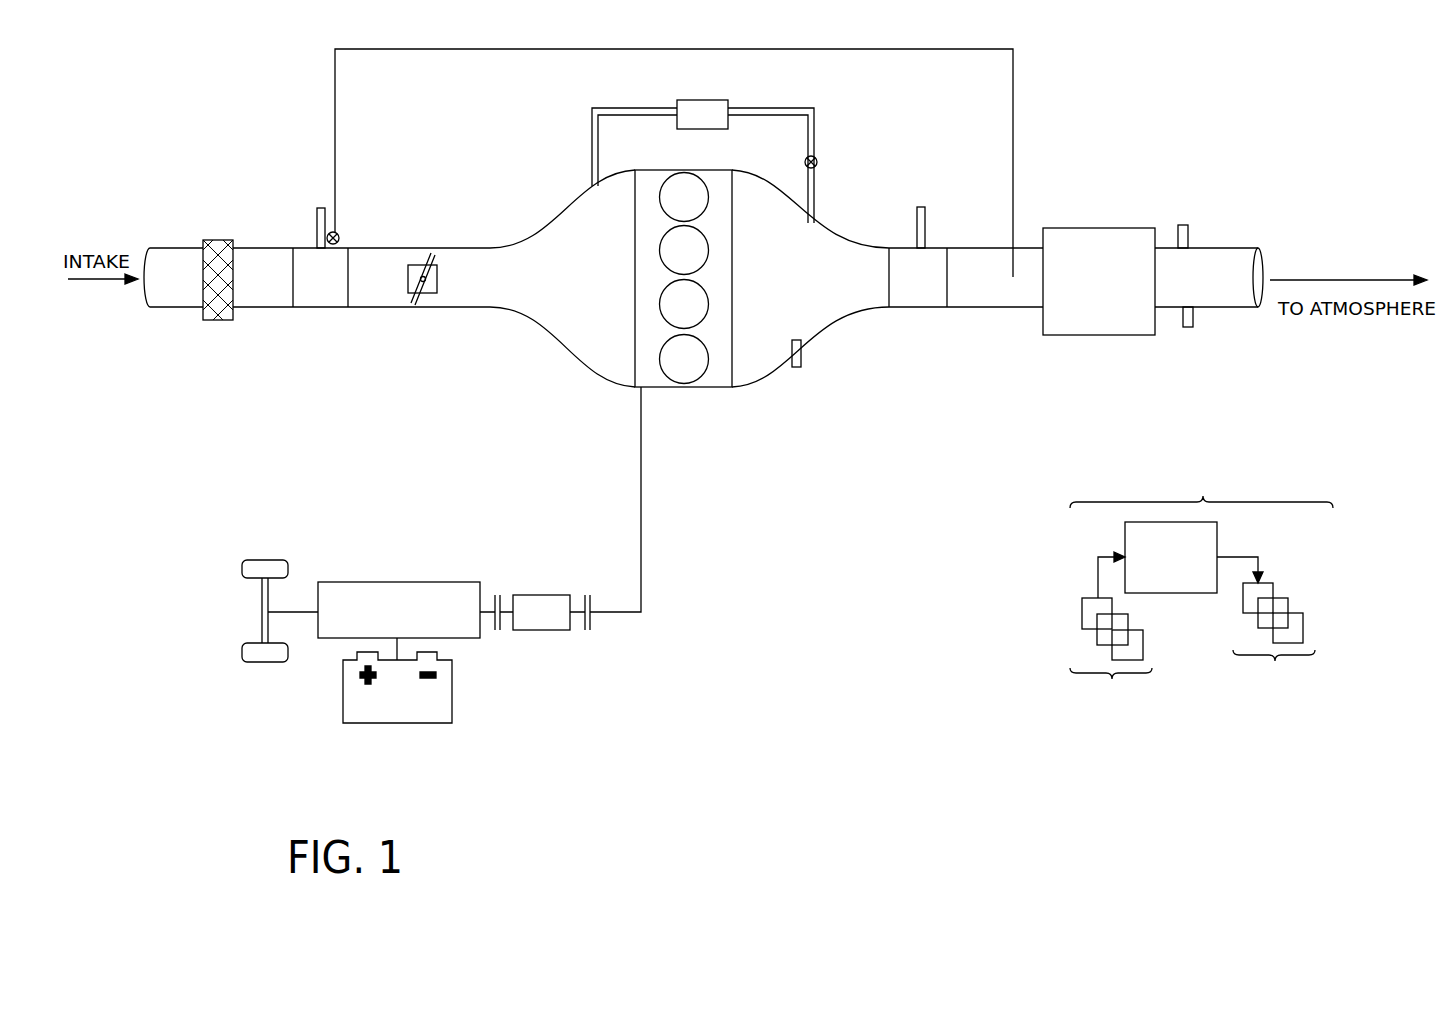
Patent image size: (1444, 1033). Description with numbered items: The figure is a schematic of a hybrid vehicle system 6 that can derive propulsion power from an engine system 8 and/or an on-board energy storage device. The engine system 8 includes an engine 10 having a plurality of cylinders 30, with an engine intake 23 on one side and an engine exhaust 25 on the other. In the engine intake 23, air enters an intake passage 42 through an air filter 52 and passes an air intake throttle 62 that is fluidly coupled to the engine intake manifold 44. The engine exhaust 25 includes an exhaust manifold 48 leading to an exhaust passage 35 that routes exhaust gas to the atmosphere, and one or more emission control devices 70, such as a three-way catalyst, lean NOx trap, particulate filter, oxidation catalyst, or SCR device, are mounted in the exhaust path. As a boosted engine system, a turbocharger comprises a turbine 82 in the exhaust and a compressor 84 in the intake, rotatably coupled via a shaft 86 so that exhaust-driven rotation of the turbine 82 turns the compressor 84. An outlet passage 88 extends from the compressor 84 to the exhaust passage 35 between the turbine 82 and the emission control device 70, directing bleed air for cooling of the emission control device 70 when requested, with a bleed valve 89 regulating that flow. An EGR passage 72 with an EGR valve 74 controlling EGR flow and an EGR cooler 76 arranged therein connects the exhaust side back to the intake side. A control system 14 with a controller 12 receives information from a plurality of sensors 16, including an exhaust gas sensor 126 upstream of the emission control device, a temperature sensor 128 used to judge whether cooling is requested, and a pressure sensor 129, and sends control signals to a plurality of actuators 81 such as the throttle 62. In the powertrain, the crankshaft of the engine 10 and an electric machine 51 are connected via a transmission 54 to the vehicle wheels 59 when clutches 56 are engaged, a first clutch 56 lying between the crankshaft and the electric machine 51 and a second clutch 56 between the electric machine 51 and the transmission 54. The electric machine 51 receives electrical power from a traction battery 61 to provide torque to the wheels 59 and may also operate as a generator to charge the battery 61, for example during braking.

The hybrid vehicle system 6 is at (163, 138).
The engine system 8 is at (1298, 138).
The engine 10 is at (733, 258).
The controller 12 is at (1171, 557).
The control system 14 is at (1201, 585).
The sensors 16 is at (1111, 638).
The engine intake 23 is at (556, 192).
The engine exhaust 25 is at (852, 198).
The cylinders 30 is at (707, 188).
The exhaust passage 35 is at (1238, 248).
The intake passage 42 is at (184, 308).
The engine intake manifold 44 is at (591, 280).
The exhaust manifold 48 is at (813, 280).
The electric machine 51 is at (545, 631).
The air filter 52 is at (220, 240).
The transmission 54 is at (345, 639).
The clutches 56 is at (502, 600).
The vehicle wheels 59 is at (264, 663).
The traction battery 61 is at (403, 724).
The air intake throttle 62 is at (436, 286).
The emission control device 70 is at (1087, 228).
The EGR passage 72 is at (814, 110).
The EGR valve 74 is at (816, 157).
The EGR cooler 76 is at (702, 115).
The actuators 81 is at (1266, 632).
The turbine 82 is at (966, 277).
The compressor 84 is at (322, 278).
The shaft 86 is at (314, 208).
The outlet passage 88 is at (1013, 49).
The bleed valve 89 is at (339, 233).
The exhaust gas sensor 126 is at (801, 348).
The temperature sensor 128 is at (1188, 327).
The pressure sensor 129 is at (1194, 209).